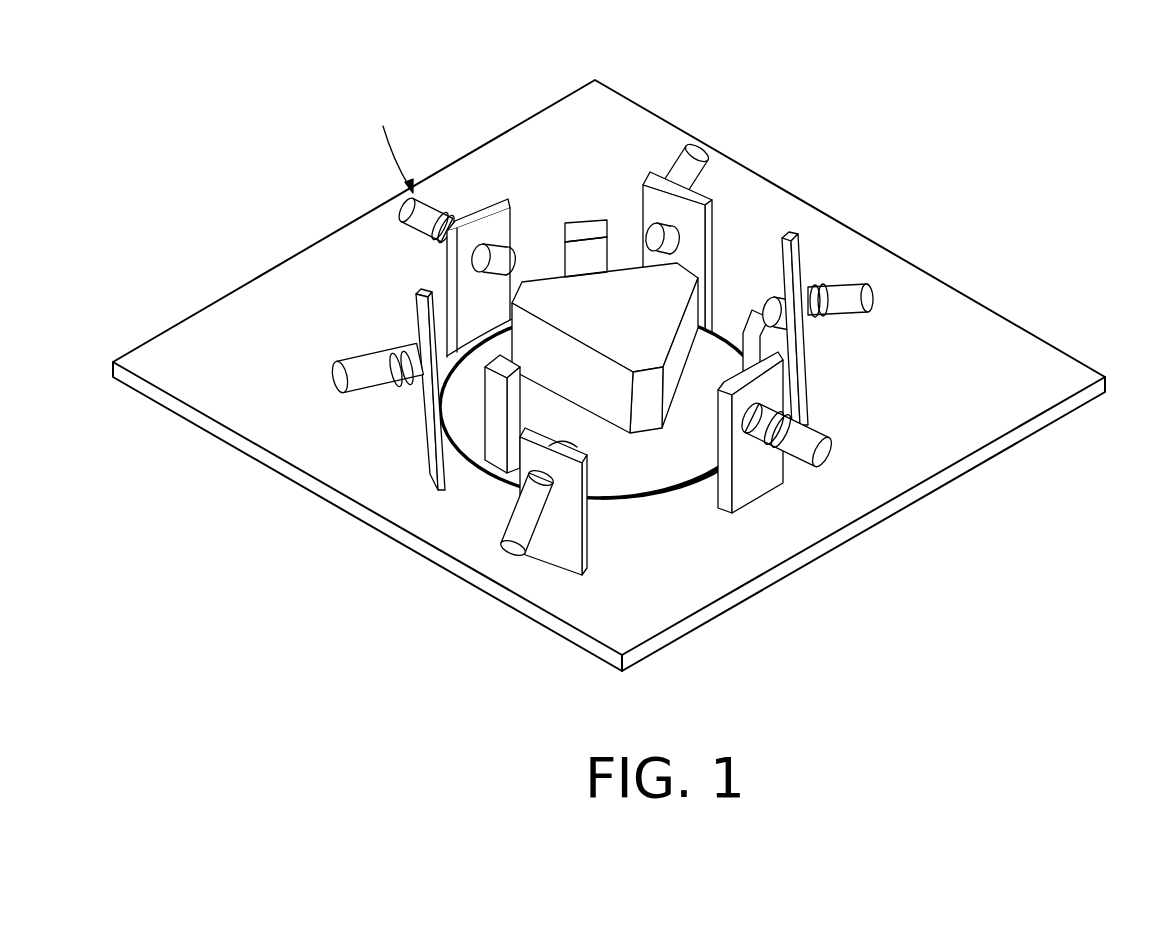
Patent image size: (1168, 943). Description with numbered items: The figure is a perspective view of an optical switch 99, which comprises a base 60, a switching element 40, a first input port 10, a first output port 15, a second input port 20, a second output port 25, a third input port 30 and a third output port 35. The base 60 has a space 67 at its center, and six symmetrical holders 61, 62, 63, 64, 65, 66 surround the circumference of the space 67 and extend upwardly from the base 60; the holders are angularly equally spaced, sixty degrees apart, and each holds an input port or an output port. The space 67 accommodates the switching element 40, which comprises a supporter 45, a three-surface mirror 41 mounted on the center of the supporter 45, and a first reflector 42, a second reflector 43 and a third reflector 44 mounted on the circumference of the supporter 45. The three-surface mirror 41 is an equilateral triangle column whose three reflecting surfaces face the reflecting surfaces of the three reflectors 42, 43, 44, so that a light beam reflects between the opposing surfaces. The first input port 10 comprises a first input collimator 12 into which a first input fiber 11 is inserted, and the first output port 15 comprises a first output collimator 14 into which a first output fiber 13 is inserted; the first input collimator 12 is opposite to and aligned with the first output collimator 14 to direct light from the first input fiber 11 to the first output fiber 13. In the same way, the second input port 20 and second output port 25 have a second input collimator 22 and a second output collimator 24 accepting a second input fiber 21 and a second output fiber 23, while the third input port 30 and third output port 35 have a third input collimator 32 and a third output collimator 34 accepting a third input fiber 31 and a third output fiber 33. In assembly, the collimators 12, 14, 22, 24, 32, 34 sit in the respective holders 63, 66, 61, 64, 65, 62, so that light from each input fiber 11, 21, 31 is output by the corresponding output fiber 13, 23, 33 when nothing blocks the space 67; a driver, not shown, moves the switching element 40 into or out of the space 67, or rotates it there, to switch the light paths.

The first input port 10 is at (883, 463).
The first input fiber 11 is at (818, 448).
The first input collimator 12 is at (760, 412).
The first output fiber 13 is at (380, 176).
The first output collimator 14 is at (447, 225).
The first output port 15 is at (383, 140).
The second input port 20 is at (275, 310).
The second input fiber 21 is at (347, 380).
The second input collimator 22 is at (346, 336).
The second output fiber 23 is at (911, 248).
The second output collimator 24 is at (857, 272).
The second output port 25 is at (873, 293).
The third input port 30 is at (744, 115).
The third input fiber 31 is at (720, 126).
The third input collimator 32 is at (643, 227).
The third output fiber 33 is at (512, 548).
The third output collimator 34 is at (537, 483).
The third output port 35 is at (532, 557).
The switching element 40 is at (613, 248).
The three-surface mirror 41 is at (662, 297).
The first reflector 42 is at (496, 437).
The second reflector 43 is at (583, 227).
The third reflector 44 is at (767, 328).
The supporter 45 is at (627, 518).
The base 60 is at (1038, 373).
The holder 61 is at (425, 468).
The holder 62 is at (563, 550).
The holder 63 is at (760, 488).
The holder 64 is at (790, 237).
The holder 65 is at (712, 218).
The holder 66 is at (447, 270).
The space 67 is at (677, 487).
The optical switch 99 is at (640, 381).